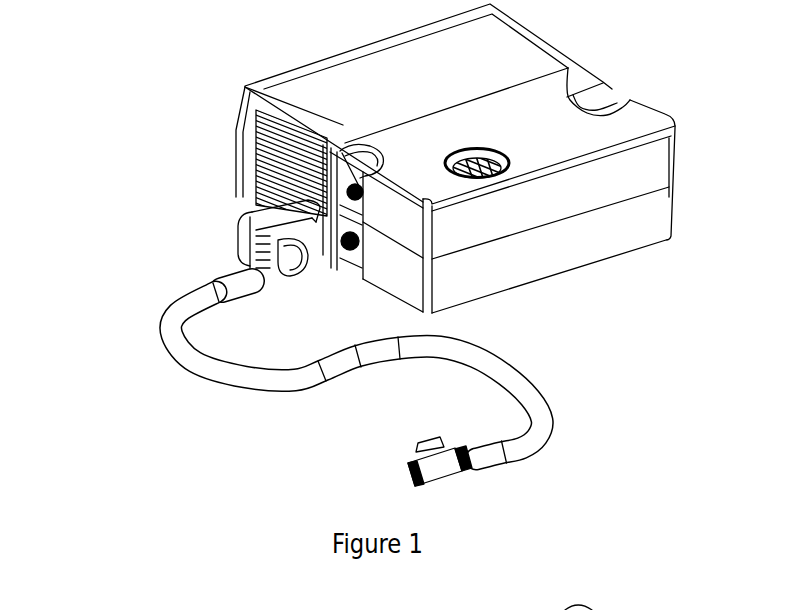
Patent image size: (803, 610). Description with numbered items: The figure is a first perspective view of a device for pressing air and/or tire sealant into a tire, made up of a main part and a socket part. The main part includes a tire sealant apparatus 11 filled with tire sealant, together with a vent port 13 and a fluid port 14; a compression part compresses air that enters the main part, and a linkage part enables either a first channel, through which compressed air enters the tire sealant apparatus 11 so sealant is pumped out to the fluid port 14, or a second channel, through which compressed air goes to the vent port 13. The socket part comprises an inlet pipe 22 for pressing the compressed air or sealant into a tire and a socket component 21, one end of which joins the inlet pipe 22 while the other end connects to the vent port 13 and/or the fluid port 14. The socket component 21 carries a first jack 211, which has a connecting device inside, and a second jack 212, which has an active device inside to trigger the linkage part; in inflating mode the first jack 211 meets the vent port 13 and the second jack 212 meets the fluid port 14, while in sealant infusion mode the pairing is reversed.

The tire sealant apparatus 11 is at (461, 158).
The vent port 13 is at (308, 95).
The fluid port 14 is at (228, 270).
The socket component 21 is at (202, 188).
The first jack 211 is at (296, 273).
The second jack 212 is at (300, 223).
The inlet pipe 22 is at (308, 390).